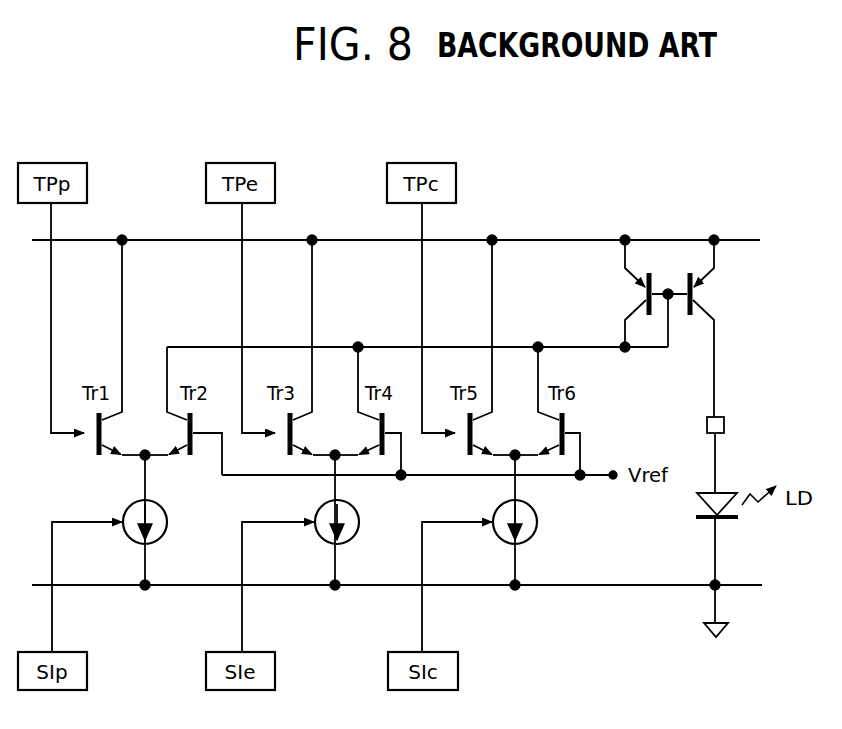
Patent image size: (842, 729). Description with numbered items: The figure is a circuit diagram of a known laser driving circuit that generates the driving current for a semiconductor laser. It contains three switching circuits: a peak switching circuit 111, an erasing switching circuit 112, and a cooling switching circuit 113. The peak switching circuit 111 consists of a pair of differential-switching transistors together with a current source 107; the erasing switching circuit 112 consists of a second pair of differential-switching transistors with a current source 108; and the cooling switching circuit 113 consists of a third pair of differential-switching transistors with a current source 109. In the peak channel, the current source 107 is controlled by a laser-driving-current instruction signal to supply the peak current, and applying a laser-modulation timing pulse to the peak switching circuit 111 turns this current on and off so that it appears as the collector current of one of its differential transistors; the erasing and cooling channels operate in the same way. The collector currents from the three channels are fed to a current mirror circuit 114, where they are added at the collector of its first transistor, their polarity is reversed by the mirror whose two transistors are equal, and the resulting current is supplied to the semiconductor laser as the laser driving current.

The current source 107 is at (167, 503).
The current source 108 is at (359, 503).
The current source 109 is at (537, 503).
The peak switching circuit 111 is at (119, 235).
The erasing switching circuit 112 is at (307, 235).
The cooling switching circuit 113 is at (490, 235).
The current mirror circuit 114 is at (650, 262).